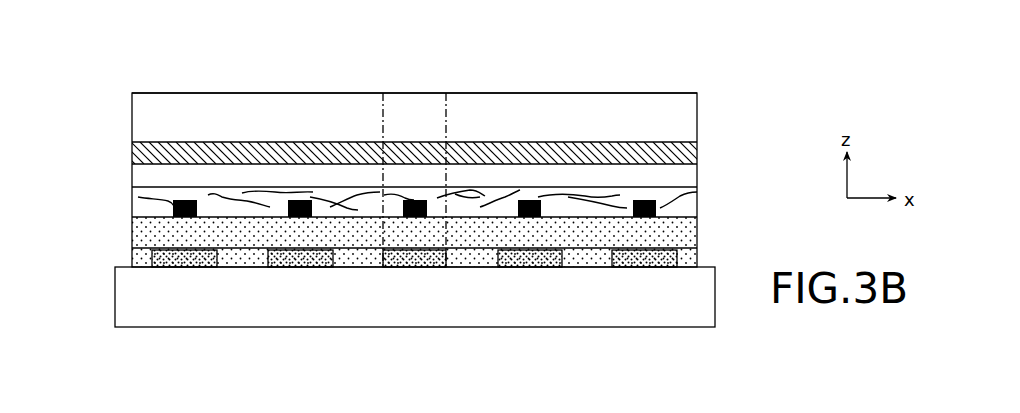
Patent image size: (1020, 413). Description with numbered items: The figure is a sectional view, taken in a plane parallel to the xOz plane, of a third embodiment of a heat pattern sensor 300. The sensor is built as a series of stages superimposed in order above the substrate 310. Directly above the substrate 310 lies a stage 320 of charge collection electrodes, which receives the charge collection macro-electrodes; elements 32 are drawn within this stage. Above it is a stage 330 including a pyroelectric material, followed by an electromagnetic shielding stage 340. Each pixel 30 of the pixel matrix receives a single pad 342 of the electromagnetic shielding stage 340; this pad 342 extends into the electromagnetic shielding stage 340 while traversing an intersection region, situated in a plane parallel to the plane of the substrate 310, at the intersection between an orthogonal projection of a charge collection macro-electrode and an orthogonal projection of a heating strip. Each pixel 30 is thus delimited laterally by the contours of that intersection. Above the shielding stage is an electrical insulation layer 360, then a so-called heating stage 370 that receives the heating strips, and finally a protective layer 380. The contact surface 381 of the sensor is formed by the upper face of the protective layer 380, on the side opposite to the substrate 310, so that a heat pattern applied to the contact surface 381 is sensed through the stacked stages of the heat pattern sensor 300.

The heat pattern sensor 300 is at (736, 106).
The pixel 30 is at (426, 81).
The substrate 310 is at (125, 287).
The stage of charge collection electrodes 320 is at (130, 248).
The thin film transistors 32 is at (645, 264).
The stage including a pyroelectric material 330 is at (130, 217).
The electromagnetic shielding stage 340 is at (130, 187).
The pad 342 is at (645, 200).
The electrical insulation layer 360 is at (130, 164).
The heating stage 370 is at (130, 142).
The protective layer 380 is at (130, 93).
The contact surface 381 is at (282, 92).